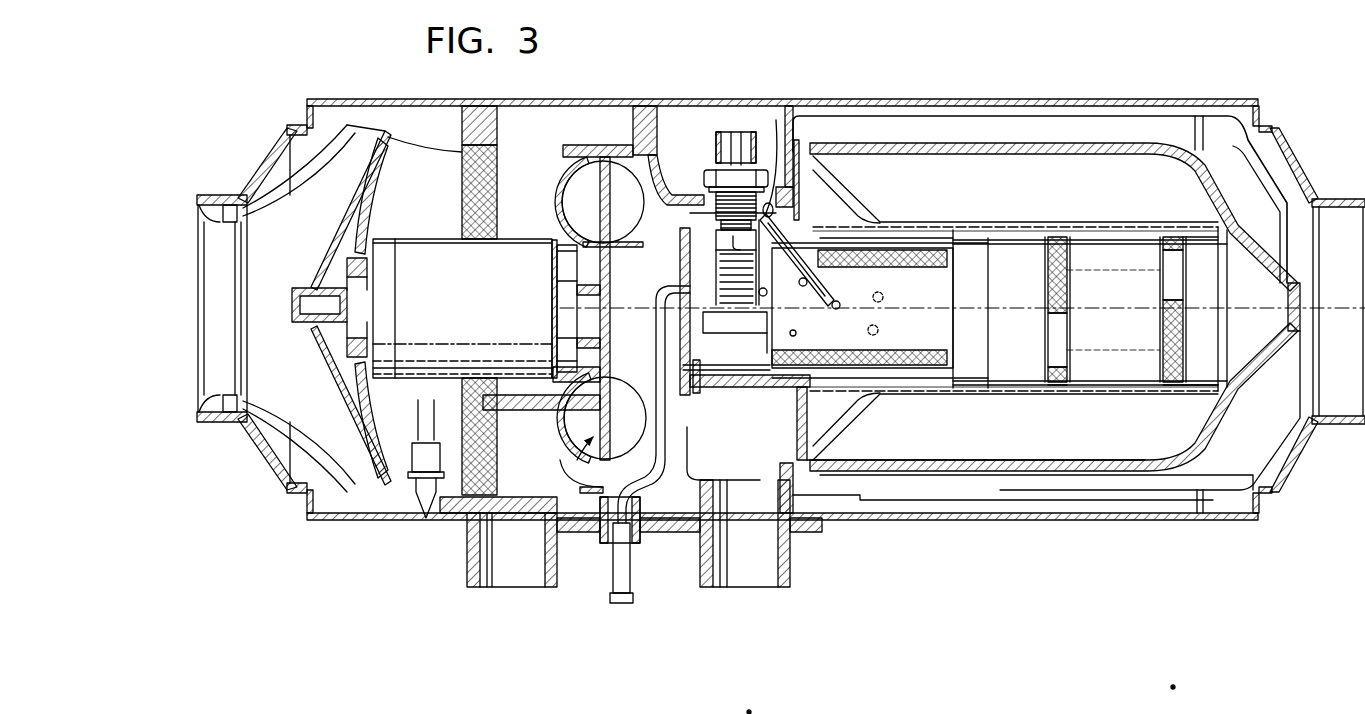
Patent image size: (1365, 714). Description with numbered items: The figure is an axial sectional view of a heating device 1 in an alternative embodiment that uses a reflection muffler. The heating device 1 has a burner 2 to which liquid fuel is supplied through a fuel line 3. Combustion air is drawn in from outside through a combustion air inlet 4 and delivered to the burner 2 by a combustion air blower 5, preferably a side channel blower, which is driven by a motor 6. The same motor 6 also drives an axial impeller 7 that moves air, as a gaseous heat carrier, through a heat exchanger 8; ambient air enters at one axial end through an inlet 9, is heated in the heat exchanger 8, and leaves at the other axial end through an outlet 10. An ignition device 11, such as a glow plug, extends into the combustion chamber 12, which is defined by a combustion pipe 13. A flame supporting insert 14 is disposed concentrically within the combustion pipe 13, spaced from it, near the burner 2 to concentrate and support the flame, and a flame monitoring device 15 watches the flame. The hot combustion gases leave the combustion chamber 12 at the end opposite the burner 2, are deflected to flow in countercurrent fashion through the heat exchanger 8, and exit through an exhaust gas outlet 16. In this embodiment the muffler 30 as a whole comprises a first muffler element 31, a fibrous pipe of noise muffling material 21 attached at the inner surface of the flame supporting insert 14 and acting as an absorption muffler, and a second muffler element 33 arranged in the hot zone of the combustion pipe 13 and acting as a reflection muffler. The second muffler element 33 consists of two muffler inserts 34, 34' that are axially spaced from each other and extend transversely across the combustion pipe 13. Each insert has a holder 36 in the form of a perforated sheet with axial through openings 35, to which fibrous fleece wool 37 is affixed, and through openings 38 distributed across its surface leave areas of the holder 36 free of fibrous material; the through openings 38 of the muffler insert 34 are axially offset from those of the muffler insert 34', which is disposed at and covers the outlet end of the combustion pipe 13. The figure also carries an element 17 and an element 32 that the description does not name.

The heating device 1 is at (1258, 86).
The burner 2 is at (700, 250).
The fuel line 3 is at (650, 530).
The combustion air inlet 4 is at (470, 555).
The combustion air blower 5 is at (593, 462).
The motor 6 is at (478, 322).
The axial impeller 7 is at (318, 140).
The heat exchanger 8 is at (1158, 150).
The inlet 9 is at (207, 342).
The outlet 10 is at (1332, 425).
The ignition device 11 is at (759, 165).
The combustion chamber 12 is at (1021, 318).
The combustion pipe 13 is at (963, 365).
The flame supporting insert 14 is at (898, 365).
The flame monitoring device 15 is at (815, 228).
The exhaust gas outlet 16 is at (785, 550).
The conical end wall 17 is at (1262, 258).
The noise muffling material 21 is at (922, 365).
The muffler 30 is at (930, 245).
The first muffler element 31 is at (893, 249).
The inner liner 32 is at (857, 248).
The second muffler element 33 is at (1164, 397).
The muffler insert 34 is at (1090, 403).
The muffler insert 34' is at (1185, 407).
The axial through openings 35 is at (1057, 330).
The holder 36 is at (1050, 372).
The fleece wool 37 is at (1062, 272).
The through openings 38 is at (1180, 277).